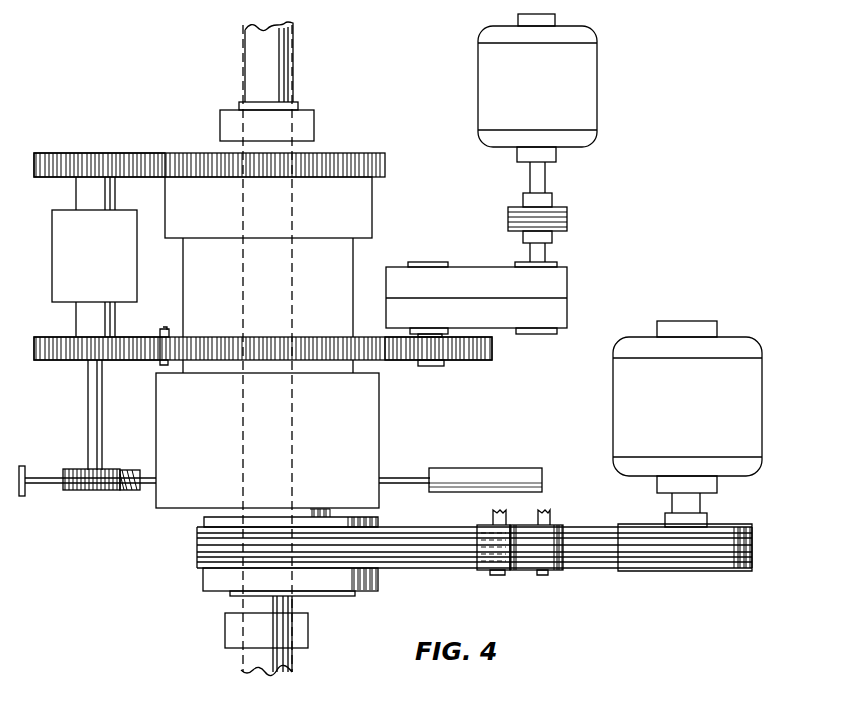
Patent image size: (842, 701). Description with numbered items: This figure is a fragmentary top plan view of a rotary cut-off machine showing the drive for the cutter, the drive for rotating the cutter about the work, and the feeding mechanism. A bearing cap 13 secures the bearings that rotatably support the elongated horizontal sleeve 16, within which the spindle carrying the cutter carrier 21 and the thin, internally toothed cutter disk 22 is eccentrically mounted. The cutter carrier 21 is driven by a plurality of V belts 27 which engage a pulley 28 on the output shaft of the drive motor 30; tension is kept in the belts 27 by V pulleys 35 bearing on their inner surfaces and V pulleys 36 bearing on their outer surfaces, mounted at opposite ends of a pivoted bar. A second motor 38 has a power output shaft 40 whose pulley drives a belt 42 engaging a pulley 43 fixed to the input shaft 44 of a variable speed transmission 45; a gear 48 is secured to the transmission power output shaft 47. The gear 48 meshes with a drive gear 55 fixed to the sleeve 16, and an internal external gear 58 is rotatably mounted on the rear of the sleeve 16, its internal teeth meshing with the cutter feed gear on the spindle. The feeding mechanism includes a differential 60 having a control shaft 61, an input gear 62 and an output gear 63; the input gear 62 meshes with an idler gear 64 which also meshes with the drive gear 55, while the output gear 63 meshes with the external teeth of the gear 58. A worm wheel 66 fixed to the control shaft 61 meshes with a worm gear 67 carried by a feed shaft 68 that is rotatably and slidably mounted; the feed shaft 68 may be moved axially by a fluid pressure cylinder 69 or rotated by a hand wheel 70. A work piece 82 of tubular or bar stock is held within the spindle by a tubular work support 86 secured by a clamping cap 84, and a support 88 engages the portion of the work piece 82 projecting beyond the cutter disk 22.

The bearing cap 13 is at (319, 427).
The sleeve 16 is at (192, 264).
The cutter carrier 21 is at (378, 587).
The cutter disk 22 is at (340, 596).
The V belts 27 is at (421, 548).
The pulley 28 is at (652, 572).
The drive motor 30 is at (618, 394).
The V pulleys 35 is at (558, 571).
The V pulleys 36 is at (482, 571).
The second motor 38 is at (590, 106).
The power output shaft 40 is at (546, 177).
The belt 42 is at (568, 212).
The pulley 43 is at (566, 232).
The input shaft 44 is at (546, 250).
The variable speed transmission 45 is at (478, 274).
The power output shaft 47 is at (436, 367).
The gear 48 is at (486, 362).
The drive gear 55 is at (326, 337).
The internal external gear 58 is at (191, 144).
The differential 60 is at (46, 276).
The control shaft 61 is at (89, 426).
The input gear 62 is at (54, 337).
The output gear 63 is at (88, 153).
The idler gear 64 is at (165, 329).
The worm wheel 66 is at (98, 491).
The worm gear 67 is at (131, 491).
The feed shaft 68 is at (205, 484).
The fluid pressure cylinder 69 is at (498, 467).
The hand wheel 70 is at (24, 470).
The work piece 82 is at (290, 46).
The clamping cap 84 is at (314, 124).
The tubular work support 86 is at (297, 103).
The support 88 is at (308, 637).